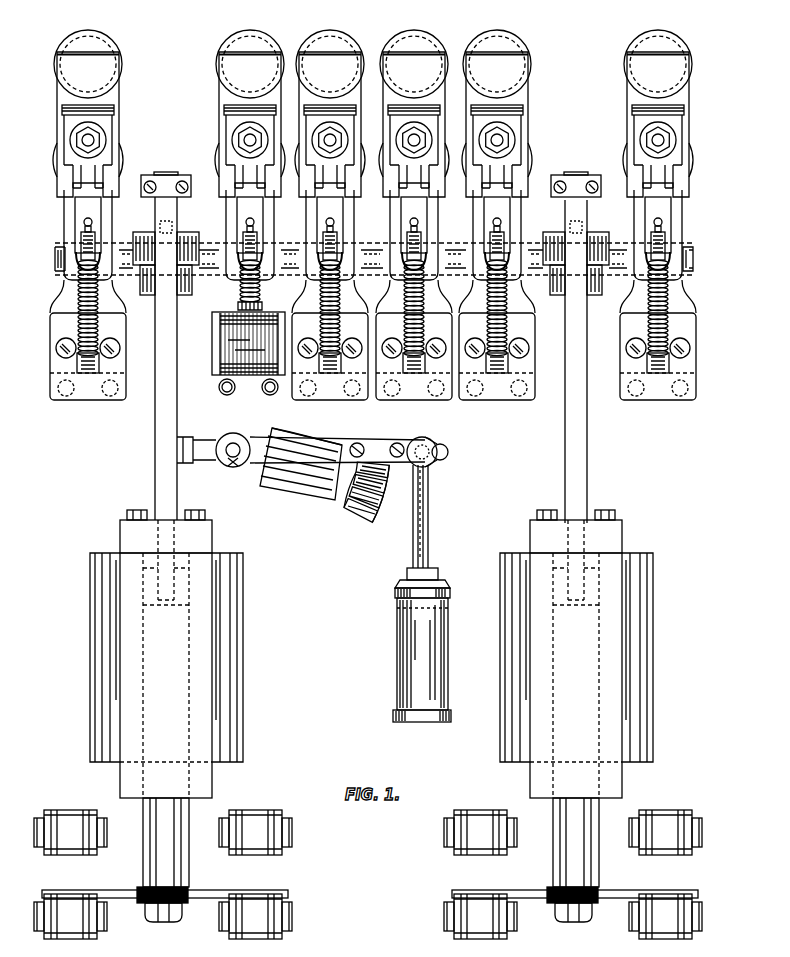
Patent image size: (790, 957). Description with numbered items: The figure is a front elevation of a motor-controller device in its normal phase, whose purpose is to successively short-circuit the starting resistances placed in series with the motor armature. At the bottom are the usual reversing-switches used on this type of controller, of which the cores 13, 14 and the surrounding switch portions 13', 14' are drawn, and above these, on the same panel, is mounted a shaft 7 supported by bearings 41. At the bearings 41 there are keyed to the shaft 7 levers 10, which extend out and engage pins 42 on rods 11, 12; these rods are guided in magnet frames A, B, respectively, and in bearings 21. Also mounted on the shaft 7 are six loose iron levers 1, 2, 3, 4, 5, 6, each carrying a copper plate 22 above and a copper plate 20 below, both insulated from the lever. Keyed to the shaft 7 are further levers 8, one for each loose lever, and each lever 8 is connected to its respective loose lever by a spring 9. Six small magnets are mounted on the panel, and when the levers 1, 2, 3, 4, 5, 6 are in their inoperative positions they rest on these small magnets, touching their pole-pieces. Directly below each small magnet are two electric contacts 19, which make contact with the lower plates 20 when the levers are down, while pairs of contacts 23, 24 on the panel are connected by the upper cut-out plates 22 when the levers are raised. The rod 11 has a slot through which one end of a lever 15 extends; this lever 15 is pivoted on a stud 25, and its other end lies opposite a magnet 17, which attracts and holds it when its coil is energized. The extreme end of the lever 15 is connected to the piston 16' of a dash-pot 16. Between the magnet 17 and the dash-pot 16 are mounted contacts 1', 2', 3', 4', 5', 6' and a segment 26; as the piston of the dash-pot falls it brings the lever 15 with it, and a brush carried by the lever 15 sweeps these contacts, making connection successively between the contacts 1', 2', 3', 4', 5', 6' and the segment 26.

The iron lever 1 is at (83, 166).
The iron lever 2 is at (246, 166).
The iron lever 3 is at (328, 166).
The iron lever 4 is at (410, 166).
The iron lever 5 is at (493, 166).
The iron lever 6 is at (665, 166).
The shaft 7 is at (56, 255).
The lever 8 is at (80, 242).
The spring 9 is at (78, 324).
The lever 10 is at (190, 294).
The rod 11 is at (163, 405).
The rod 12 is at (572, 417).
The core of reversing-switch 13 is at (163, 729).
The outer cylinder A 13' is at (145, 657).
The core of reversing-switch 14 is at (573, 729).
The outer cylinder B 14' is at (603, 657).
The lever 15 is at (312, 448).
The dash-pot 16 is at (407, 645).
The piston 16' is at (399, 546).
The magnet 17 is at (298, 488).
The electric contacts 19 is at (110, 392).
The copper plate 20 is at (60, 380).
The bearing 21 is at (155, 175).
The copper plate 22 is at (222, 96).
The contact 23 is at (222, 44).
The contact 24 is at (220, 154).
The stud 25 is at (240, 466).
The segment 26 is at (380, 512).
The bearing 41 is at (142, 232).
The pin 42 is at (162, 284).
The contact 1' is at (432, 458).
The contact 2' is at (367, 450).
The contact 3' is at (386, 479).
The contact 4' is at (307, 452).
The contact 5' is at (384, 493).
The contact 6' is at (350, 507).
The magnet frame A is at (125, 545).
The magnet frame B is at (610, 552).